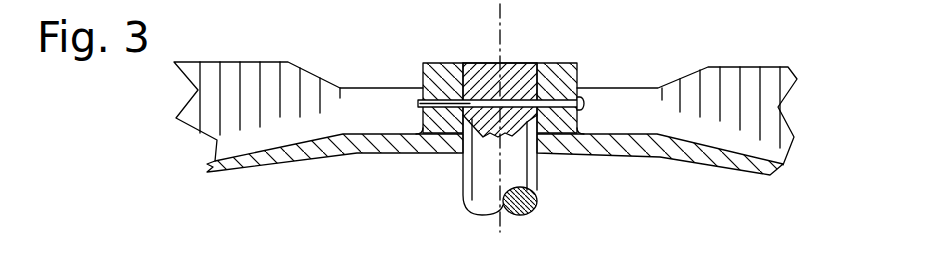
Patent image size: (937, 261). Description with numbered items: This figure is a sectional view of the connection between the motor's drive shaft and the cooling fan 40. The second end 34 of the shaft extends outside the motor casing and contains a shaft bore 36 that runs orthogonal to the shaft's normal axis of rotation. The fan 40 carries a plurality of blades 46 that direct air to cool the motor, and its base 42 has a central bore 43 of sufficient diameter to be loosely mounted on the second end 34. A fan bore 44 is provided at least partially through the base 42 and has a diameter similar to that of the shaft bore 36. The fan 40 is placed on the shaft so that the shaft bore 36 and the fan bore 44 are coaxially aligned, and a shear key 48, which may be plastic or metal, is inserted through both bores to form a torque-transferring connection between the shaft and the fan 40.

The second end of shaft 34 is at (525, 63).
The shaft bore 36 is at (500, 165).
The cooling fan 40 is at (609, 33).
The base 42 is at (441, 62).
The central bore 43 is at (478, 63).
The fan bore 44 is at (425, 129).
The blades 46 is at (208, 62).
The shear key 48 is at (587, 101).